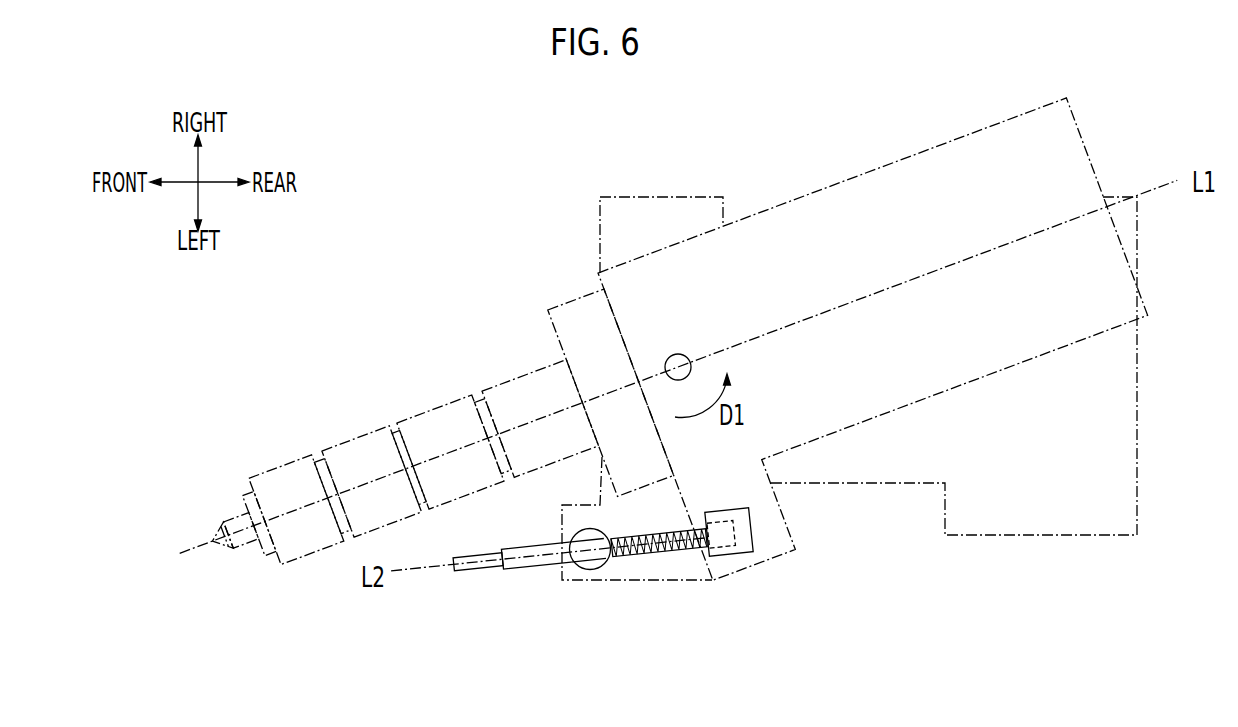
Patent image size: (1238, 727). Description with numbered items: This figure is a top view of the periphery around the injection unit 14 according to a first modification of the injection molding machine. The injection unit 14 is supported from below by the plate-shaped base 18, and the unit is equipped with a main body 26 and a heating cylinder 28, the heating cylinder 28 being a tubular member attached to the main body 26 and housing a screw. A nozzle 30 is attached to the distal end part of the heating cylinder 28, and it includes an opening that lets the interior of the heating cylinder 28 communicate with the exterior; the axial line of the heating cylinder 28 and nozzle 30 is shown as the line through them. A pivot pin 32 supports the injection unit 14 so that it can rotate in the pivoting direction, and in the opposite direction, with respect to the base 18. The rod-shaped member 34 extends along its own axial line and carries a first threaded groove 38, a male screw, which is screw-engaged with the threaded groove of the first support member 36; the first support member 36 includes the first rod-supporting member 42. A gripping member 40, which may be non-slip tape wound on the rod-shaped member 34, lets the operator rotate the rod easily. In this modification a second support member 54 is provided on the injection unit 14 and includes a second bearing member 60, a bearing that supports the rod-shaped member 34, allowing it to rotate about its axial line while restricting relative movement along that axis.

The injection unit 14 is at (764, 165).
The base 18 is at (1035, 518).
The main body 26 is at (1065, 140).
The heating cylinder 28 is at (288, 479).
The nozzle 30 is at (232, 517).
The pivot pin 32 is at (678, 354).
The rod-shaped member 34 is at (520, 572).
The first support member 36 is at (579, 576).
The first threaded groove 38 is at (668, 532).
The gripping member 40 is at (475, 574).
The first rod-supporting member 42 is at (603, 572).
The second support member 54 is at (748, 530).
The second bearing member 60 is at (731, 556).